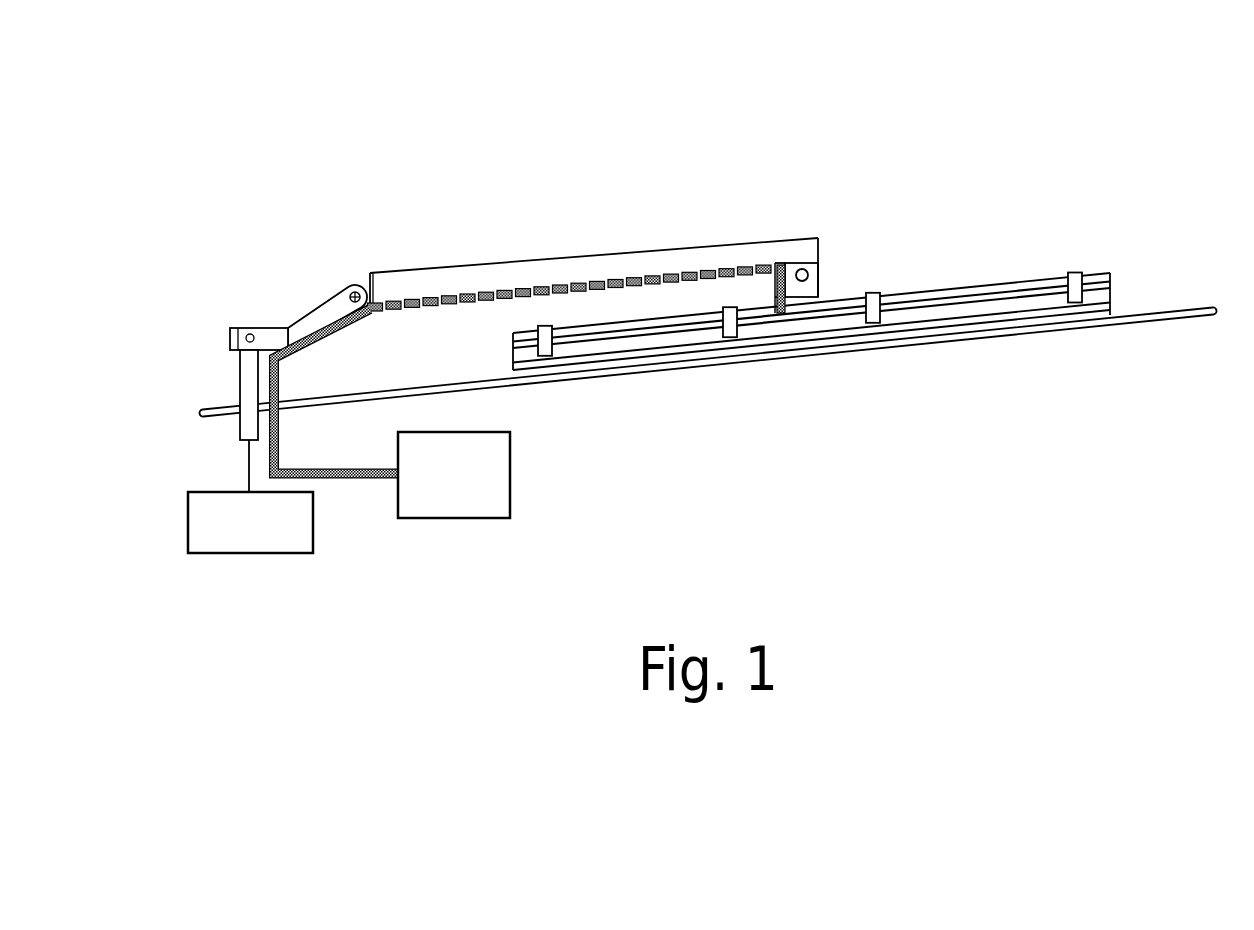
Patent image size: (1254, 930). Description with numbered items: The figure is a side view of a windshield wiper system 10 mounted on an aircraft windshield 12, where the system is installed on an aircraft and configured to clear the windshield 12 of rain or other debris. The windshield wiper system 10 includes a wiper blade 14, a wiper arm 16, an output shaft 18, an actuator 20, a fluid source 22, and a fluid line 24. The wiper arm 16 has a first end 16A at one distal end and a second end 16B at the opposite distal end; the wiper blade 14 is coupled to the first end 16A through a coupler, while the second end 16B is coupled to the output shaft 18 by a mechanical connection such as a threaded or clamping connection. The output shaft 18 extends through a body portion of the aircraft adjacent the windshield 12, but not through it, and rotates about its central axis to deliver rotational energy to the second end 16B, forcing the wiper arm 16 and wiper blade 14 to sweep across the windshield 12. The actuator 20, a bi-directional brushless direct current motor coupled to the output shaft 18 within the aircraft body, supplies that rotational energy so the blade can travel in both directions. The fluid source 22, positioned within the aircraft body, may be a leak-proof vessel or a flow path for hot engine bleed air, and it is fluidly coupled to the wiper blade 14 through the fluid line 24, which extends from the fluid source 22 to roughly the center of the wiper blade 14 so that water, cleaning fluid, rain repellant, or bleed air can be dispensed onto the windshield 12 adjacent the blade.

The windshield wiper system 10 is at (151, 90).
The aircraft windshield 12 is at (1163, 317).
The wiper blade 14 is at (1005, 259).
The wiper arm 16 is at (558, 268).
The first end 16A is at (797, 248).
The second end 16B is at (265, 328).
The output shaft 18 is at (252, 380).
The actuator 20 is at (250, 496).
The fluid source 22 is at (454, 475).
The fluid line 24 is at (343, 478).